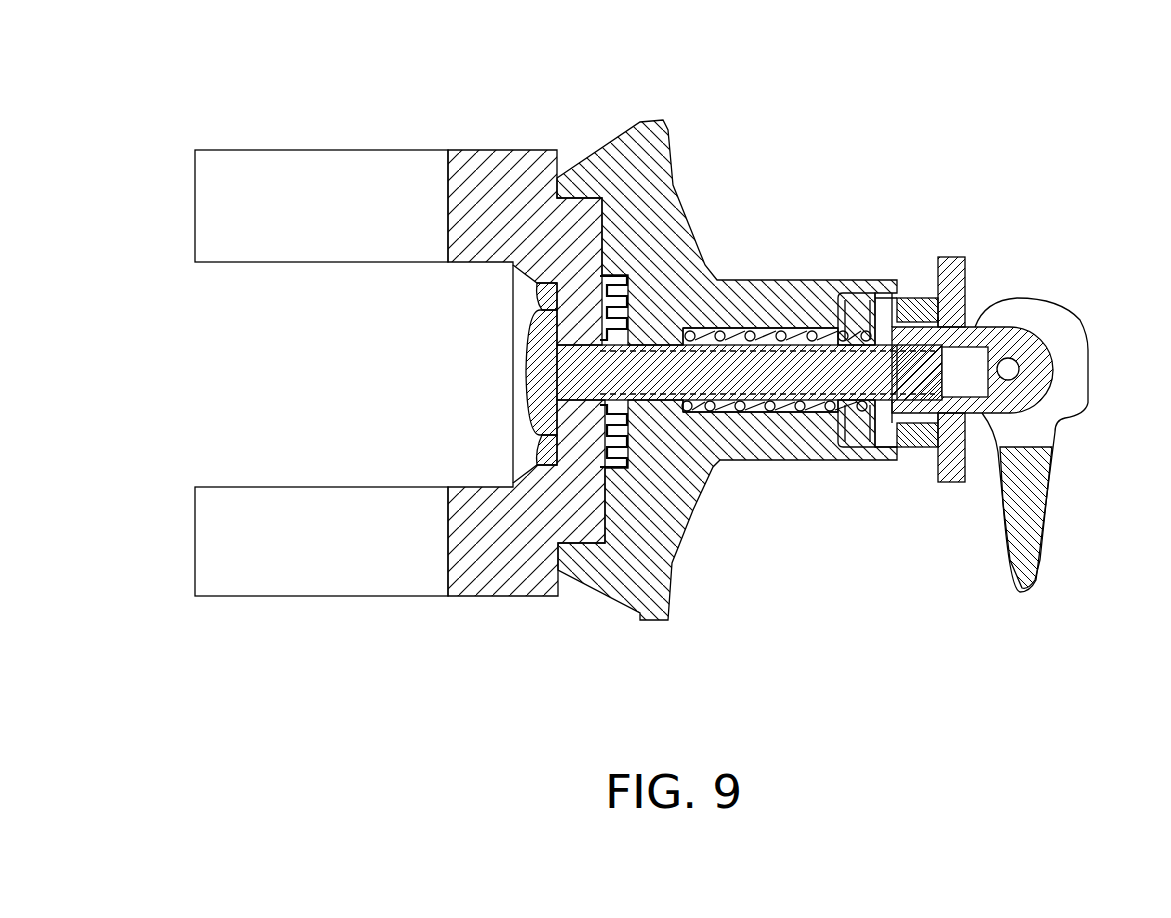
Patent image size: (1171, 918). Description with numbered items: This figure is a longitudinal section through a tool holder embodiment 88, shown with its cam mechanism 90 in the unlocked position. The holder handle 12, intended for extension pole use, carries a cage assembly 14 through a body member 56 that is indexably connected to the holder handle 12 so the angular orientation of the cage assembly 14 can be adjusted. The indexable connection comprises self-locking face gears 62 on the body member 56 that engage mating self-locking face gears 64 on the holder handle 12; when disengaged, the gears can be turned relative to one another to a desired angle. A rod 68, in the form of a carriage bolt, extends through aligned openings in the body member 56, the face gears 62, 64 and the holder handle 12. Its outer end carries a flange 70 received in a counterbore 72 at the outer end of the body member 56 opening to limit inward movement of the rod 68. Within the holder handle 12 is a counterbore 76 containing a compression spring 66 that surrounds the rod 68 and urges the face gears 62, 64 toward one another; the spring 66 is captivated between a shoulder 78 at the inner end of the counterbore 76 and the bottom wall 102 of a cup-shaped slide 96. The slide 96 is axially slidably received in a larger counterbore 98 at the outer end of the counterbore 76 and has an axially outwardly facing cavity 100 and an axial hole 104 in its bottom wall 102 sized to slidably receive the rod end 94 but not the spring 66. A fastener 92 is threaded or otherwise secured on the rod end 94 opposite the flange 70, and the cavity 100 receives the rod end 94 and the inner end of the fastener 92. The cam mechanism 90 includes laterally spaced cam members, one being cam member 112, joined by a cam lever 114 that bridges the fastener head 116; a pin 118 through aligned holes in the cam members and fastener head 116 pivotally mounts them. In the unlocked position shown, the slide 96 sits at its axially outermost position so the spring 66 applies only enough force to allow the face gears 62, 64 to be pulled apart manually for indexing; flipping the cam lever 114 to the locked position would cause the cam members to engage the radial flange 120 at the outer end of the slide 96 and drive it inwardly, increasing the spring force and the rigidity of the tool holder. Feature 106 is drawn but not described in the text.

The holder handle 12 is at (678, 190).
The cage assembly 14 is at (327, 134).
The body member 56 is at (498, 152).
The self-locking face gears 62 is at (605, 433).
The self-locking face gears 64 is at (622, 420).
The compression spring 66 is at (760, 328).
The rod 68 is at (802, 357).
The flange 70 is at (535, 368).
The counterbore 72 is at (556, 330).
The counterbore 76 is at (760, 414).
The shoulder 78 is at (675, 318).
The tool holder embodiment 88 is at (741, 148).
The cam mechanism 90 is at (1043, 283).
The fastener 92 is at (915, 322).
The rod end 94 is at (925, 388).
The slide 96 is at (918, 385).
The counterbore 98 is at (850, 453).
The cavity 100 is at (849, 307).
The bottom wall 102 is at (876, 293).
The axial hole 104 is at (880, 448).
The washer 106 is at (928, 430).
The cam member 112 is at (1058, 323).
The cam lever 114 is at (1028, 518).
The fastener head 116 is at (1032, 388).
The pin 118 is at (1010, 370).
The radial flange 120 is at (963, 272).